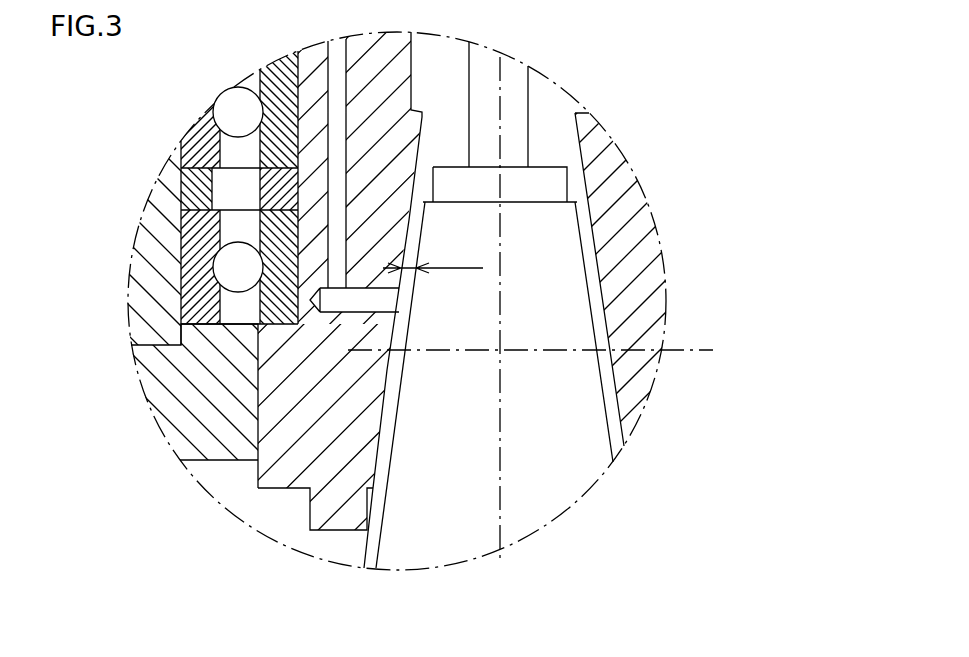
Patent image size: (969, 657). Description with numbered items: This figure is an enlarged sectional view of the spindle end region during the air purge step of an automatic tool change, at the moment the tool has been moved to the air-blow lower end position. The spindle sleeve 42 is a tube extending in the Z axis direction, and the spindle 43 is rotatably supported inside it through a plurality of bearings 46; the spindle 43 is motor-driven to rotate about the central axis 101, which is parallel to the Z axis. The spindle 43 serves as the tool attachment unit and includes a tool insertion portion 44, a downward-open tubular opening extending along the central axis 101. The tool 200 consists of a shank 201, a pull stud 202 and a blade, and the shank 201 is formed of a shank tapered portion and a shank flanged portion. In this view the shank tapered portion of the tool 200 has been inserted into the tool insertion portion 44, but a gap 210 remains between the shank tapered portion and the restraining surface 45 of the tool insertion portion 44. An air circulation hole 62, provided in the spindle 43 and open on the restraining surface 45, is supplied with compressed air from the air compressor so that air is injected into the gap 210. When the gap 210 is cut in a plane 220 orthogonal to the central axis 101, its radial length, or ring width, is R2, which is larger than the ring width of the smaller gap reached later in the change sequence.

The spindle sleeve 42 is at (163, 210).
The spindle 43 is at (257, 477).
The tool insertion portion 44 is at (362, 392).
The restraining surface 45 is at (383, 413).
The bearings 46 is at (208, 148).
The air circulation hole 62 is at (310, 299).
The central axis 101 is at (598, 478).
The tool 200 is at (621, 416).
The shank 201 is at (575, 440).
The pull stud 202 is at (518, 97).
The gap 210 is at (398, 383).
The plane 220 is at (713, 350).
The length (ring width) of gap 210C R2 is at (382, 333).